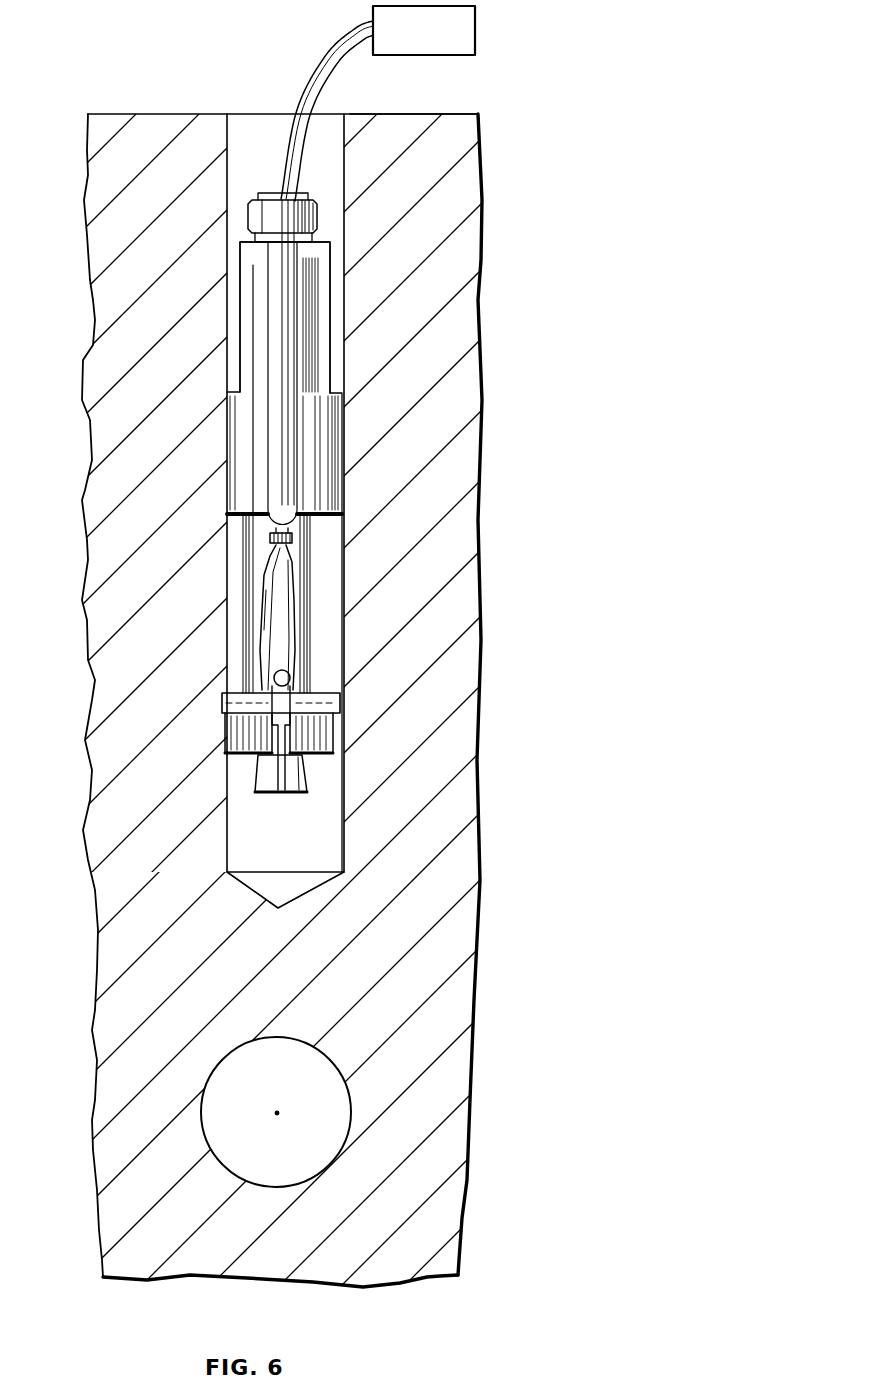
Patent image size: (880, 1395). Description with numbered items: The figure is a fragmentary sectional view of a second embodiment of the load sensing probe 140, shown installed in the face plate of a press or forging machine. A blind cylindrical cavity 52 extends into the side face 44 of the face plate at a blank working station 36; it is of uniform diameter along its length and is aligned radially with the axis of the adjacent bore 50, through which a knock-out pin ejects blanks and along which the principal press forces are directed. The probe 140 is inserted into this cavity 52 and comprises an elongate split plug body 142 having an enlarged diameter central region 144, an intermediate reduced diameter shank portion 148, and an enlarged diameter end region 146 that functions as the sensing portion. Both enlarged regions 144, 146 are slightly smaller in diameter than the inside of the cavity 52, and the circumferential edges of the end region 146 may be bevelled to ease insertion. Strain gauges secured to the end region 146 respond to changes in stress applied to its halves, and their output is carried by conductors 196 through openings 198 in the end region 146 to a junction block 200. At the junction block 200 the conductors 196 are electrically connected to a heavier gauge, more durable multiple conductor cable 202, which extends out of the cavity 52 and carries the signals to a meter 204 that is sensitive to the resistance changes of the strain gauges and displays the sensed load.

The load sensing probe 140 is at (163, 80).
The side face 44 is at (387, 116).
The blind cylindrical cavity 52 is at (228, 140).
The meter 204 is at (463, 38).
The multiple conductor cable 202 is at (317, 85).
The split plug body 142 is at (346, 436).
The enlarged diameter central region 144 is at (318, 368).
The reduced diameter shank portion 148 is at (307, 619).
The junction block 200 is at (268, 540).
The conductors 196 is at (258, 648).
The enlarged diameter end region 146 is at (340, 712).
The openings 198 is at (225, 712).
The bore 50 is at (312, 1050).
The working station 36 is at (277, 1113).